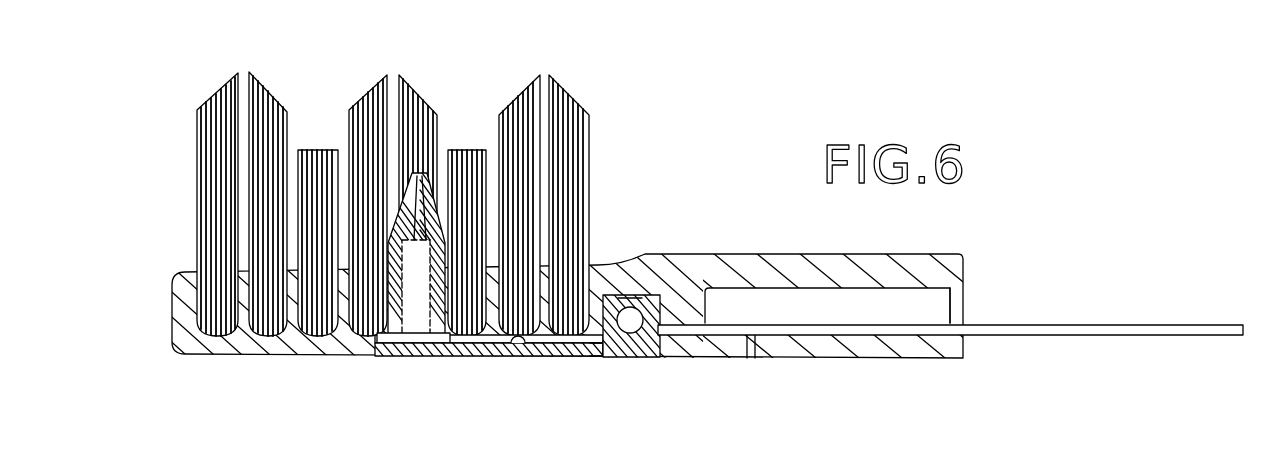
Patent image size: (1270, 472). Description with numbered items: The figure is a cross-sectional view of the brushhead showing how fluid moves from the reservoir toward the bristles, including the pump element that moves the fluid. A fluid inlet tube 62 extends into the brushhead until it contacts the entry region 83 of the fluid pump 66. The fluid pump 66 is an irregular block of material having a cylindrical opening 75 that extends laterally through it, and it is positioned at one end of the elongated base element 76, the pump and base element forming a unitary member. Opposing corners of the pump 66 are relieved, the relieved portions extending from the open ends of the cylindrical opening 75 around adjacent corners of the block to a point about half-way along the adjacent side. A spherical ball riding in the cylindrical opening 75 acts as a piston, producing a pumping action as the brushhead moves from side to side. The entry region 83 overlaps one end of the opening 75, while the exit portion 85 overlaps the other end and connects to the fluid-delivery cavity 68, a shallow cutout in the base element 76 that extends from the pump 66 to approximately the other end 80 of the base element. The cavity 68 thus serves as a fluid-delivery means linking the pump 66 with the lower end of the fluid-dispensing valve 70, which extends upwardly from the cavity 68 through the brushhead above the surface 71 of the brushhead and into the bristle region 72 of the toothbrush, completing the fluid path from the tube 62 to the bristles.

The surface of the brushhead 71 is at (193, 272).
The bristle region 72 is at (364, 84).
The fluid-dispensing valve 70 is at (410, 357).
The other end of base element 80 is at (368, 357).
The base element 76 is at (546, 358).
The fluid-delivery cavity 68 is at (516, 346).
The exit portion 85 is at (595, 358).
The fluid pump 66 is at (654, 358).
The entry region 83 is at (640, 309).
The cylindrical opening 75 is at (628, 298).
The fluid inlet tube 62 is at (1015, 326).